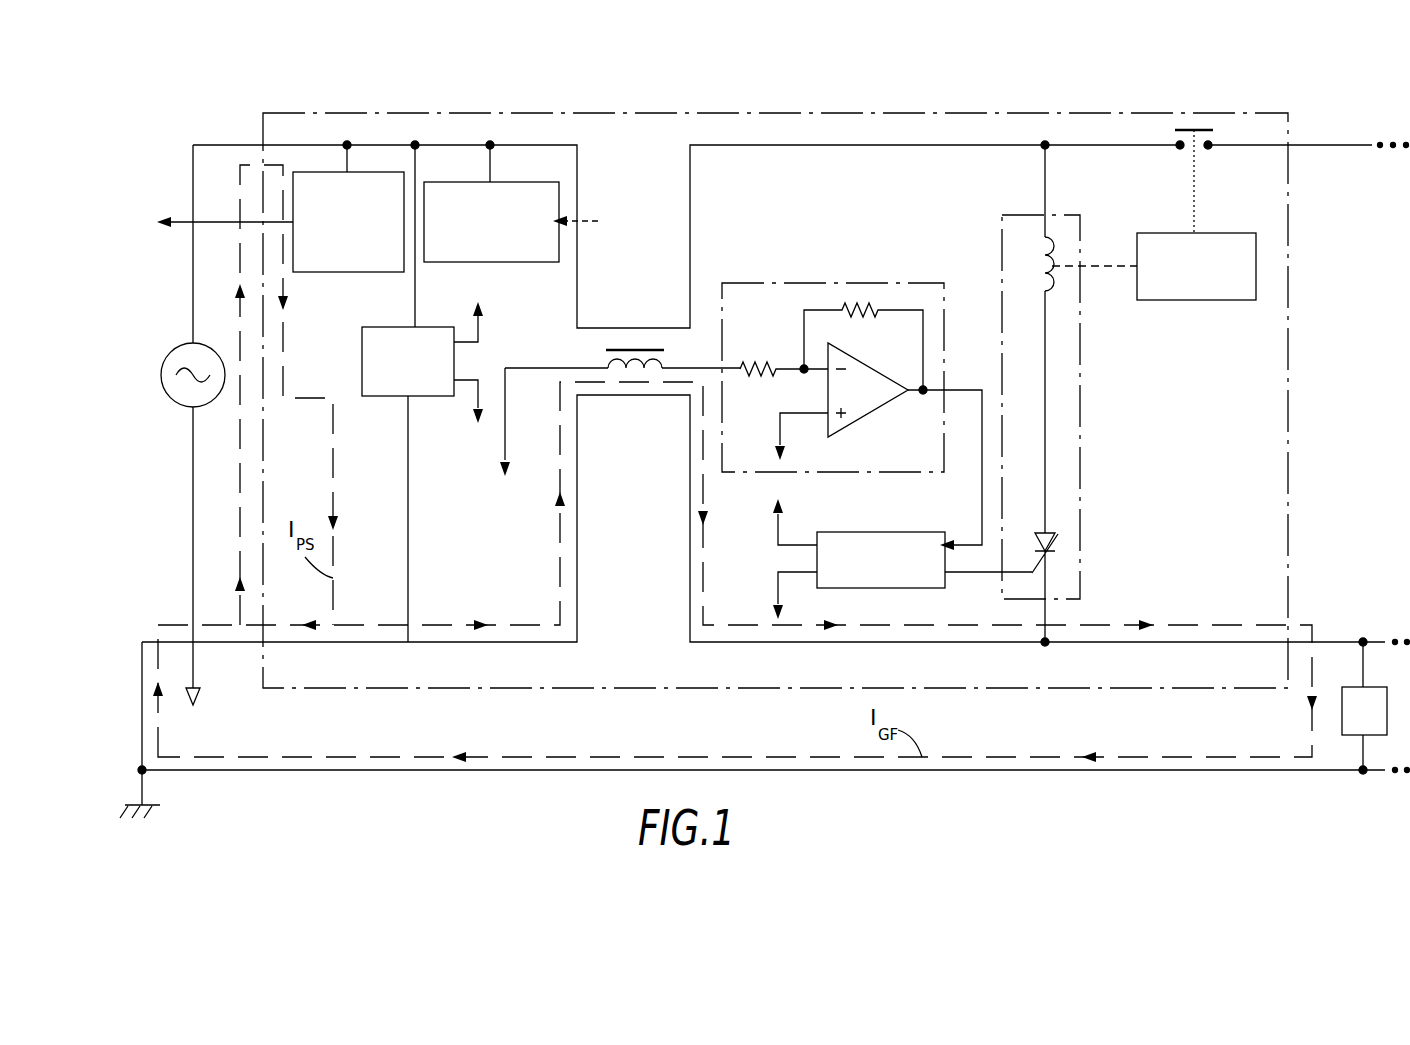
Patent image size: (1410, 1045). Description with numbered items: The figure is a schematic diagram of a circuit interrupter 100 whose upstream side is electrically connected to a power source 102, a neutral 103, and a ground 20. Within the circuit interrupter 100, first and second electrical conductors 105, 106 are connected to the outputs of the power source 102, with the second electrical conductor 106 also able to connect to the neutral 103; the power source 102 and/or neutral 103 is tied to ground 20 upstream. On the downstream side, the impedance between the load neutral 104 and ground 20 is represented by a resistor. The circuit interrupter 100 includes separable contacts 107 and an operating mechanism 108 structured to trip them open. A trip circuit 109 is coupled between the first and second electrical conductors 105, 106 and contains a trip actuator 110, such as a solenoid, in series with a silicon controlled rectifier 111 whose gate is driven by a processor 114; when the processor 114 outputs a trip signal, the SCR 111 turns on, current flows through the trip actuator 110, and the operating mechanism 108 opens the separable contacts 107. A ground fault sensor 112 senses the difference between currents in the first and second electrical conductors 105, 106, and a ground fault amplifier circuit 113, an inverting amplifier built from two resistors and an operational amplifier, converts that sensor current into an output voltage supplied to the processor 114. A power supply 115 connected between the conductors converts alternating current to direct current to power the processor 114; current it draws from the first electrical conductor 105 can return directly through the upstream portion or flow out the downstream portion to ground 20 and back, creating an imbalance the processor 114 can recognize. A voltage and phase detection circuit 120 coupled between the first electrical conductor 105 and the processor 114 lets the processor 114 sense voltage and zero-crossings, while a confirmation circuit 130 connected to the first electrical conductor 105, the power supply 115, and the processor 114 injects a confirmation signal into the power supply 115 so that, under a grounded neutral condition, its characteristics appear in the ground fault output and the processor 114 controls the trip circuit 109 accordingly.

The circuit interrupter 100 is at (756, 113).
The power source 102 is at (181, 343).
The neutral 103 is at (199, 702).
The load neutral 104 is at (1340, 641).
The first electrical conductor 105 is at (460, 145).
The second electrical conductor 106 is at (548, 645).
The separable contacts 107 is at (1199, 128).
The operating mechanism 108 is at (1178, 233).
The trip circuit 109 is at (1082, 390).
The trip actuator 110 is at (1057, 243).
The silicon controlled rectifier (SCR) 111 is at (1060, 540).
The ground fault sensor 112 is at (636, 348).
The ground fault amplifier circuit 113 is at (815, 283).
The processor 114 is at (860, 532).
The power supply 115 is at (386, 398).
The voltage and phase detection circuit 120 is at (336, 273).
The confirmation circuit 130 is at (505, 265).
The ground 20 is at (158, 815).